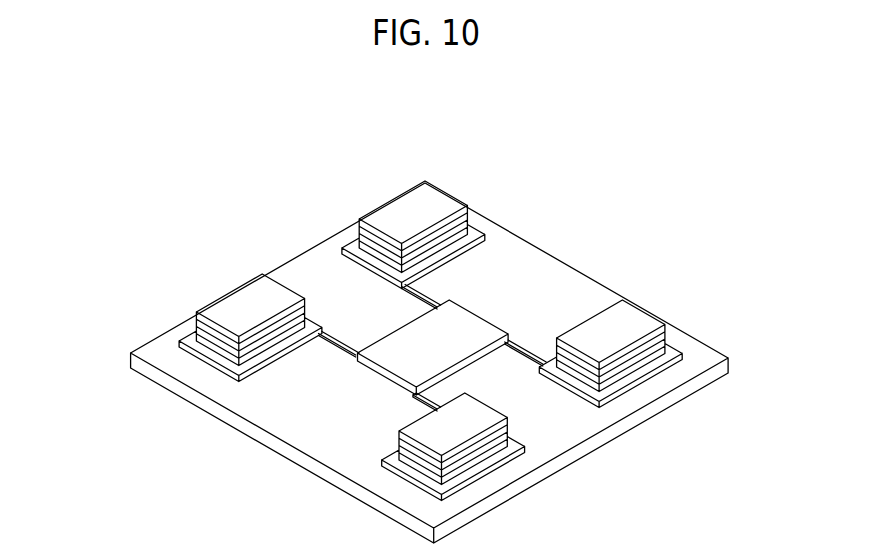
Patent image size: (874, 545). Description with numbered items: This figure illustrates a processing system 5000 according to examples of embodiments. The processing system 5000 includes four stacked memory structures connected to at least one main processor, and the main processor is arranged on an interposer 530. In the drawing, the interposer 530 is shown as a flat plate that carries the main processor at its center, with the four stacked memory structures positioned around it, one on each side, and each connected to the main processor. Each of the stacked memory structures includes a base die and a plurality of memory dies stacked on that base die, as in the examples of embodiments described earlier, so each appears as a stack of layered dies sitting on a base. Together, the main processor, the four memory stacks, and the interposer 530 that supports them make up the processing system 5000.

The processing system 5000 is at (170, 122).
The interposer 530 is at (585, 432).